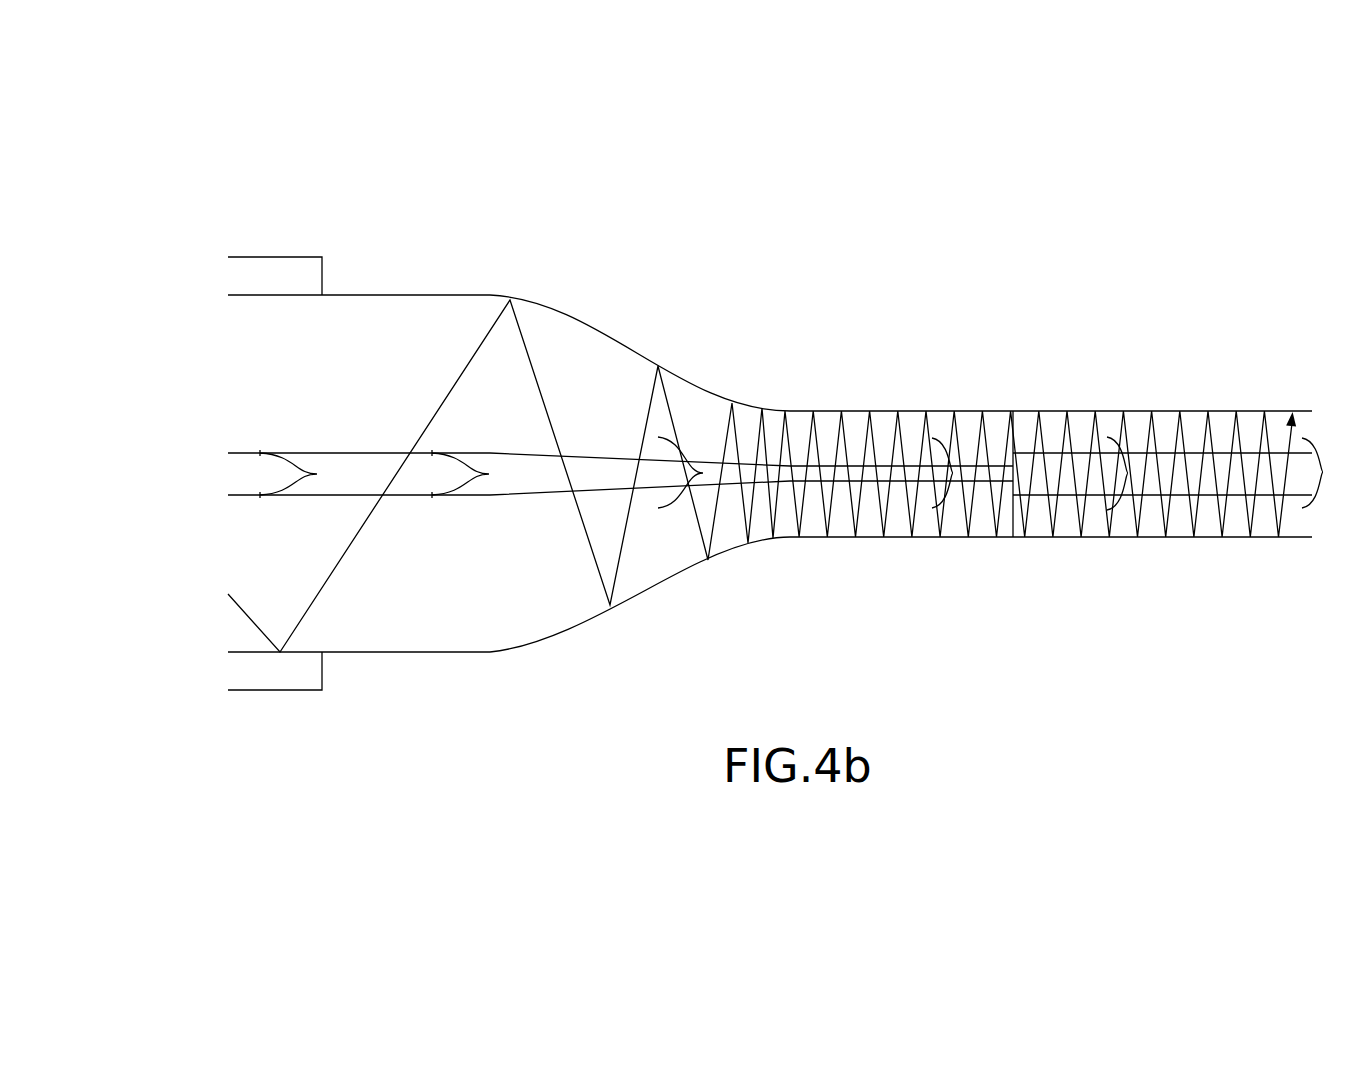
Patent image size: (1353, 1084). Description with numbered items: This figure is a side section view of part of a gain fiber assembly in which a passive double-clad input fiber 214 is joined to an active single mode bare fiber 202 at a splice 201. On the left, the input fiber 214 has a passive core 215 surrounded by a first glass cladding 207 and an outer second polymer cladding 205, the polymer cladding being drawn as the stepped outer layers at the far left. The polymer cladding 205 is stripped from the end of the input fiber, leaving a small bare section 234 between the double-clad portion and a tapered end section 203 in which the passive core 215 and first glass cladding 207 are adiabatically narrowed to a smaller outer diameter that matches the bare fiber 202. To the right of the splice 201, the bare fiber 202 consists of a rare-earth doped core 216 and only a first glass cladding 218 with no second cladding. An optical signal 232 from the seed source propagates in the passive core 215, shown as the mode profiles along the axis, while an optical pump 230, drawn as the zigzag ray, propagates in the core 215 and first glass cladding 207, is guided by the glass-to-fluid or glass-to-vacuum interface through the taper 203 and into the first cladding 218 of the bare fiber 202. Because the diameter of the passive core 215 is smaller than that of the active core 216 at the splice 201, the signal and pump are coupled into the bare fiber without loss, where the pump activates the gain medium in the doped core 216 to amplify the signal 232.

The passive double-clad input fiber 214 is at (304, 190).
The small bare section 234 is at (666, 282).
The first glass cladding 207 is at (620, 423).
The passive core 215 is at (344, 404).
The optical pump 230 is at (763, 469).
The optical signal 232 is at (805, 542).
The tapered end section 203 is at (751, 633).
The second polymer cladding 205 is at (359, 683).
The splice 201 is at (978, 407).
The first glass cladding 218 is at (1162, 344).
The active single mode fiber 202 is at (1162, 333).
The doped core 216 is at (1325, 523).